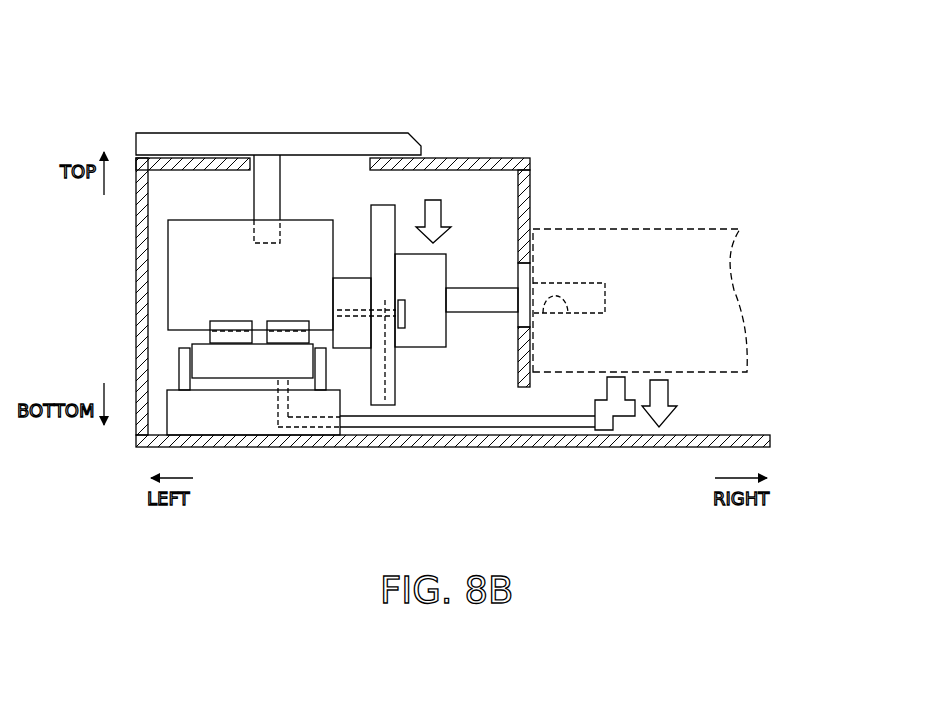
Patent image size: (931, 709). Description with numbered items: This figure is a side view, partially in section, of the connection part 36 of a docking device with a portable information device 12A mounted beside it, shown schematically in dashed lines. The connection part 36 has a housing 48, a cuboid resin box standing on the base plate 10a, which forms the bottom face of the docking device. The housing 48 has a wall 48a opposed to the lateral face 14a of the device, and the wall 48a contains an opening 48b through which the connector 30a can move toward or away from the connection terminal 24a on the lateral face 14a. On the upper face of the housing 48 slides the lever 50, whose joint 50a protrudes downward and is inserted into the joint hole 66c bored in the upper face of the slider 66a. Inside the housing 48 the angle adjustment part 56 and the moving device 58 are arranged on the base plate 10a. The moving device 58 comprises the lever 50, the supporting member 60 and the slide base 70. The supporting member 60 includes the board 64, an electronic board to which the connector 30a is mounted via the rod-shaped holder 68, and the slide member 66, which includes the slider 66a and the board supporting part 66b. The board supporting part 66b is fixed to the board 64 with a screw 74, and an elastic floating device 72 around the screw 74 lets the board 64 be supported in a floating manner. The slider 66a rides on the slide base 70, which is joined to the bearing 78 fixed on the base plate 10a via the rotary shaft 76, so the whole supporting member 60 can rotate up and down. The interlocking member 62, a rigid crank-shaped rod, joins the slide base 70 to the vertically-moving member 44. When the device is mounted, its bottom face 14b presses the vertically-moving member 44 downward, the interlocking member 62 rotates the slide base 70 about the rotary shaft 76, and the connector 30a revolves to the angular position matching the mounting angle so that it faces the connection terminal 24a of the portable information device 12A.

The connection part 36 is at (121, 104).
The lever 50 is at (173, 143).
The joint 50a is at (267, 165).
The base plate 10a is at (773, 437).
The housing 48 is at (522, 157).
The wall 48a is at (530, 212).
The opening 48b is at (524, 283).
The connector 30a is at (527, 225).
The moving device 58 is at (430, 105).
The supporting member 60 is at (383, 72).
The slide member 66 is at (318, 235).
The board 64 is at (382, 213).
The slider 66a is at (168, 235).
The joint hole 66c is at (254, 232).
The board supporting part 66b is at (355, 335).
The holder 68 is at (470, 297).
The screw 74 is at (405, 322).
The floating device 72 is at (385, 400).
The rotary shaft 76 is at (190, 360).
The slide base 70 is at (228, 365).
The bearing 78 is at (255, 420).
The interlocking member 62 is at (442, 420).
The vertically-moving member 44 is at (612, 378).
The lateral face 14a is at (517, 388).
The bottom face 14b is at (684, 372).
The connection terminal 24a is at (568, 313).
The portable information device 12A is at (726, 226).
The angle adjustment part 56 is at (723, 391).